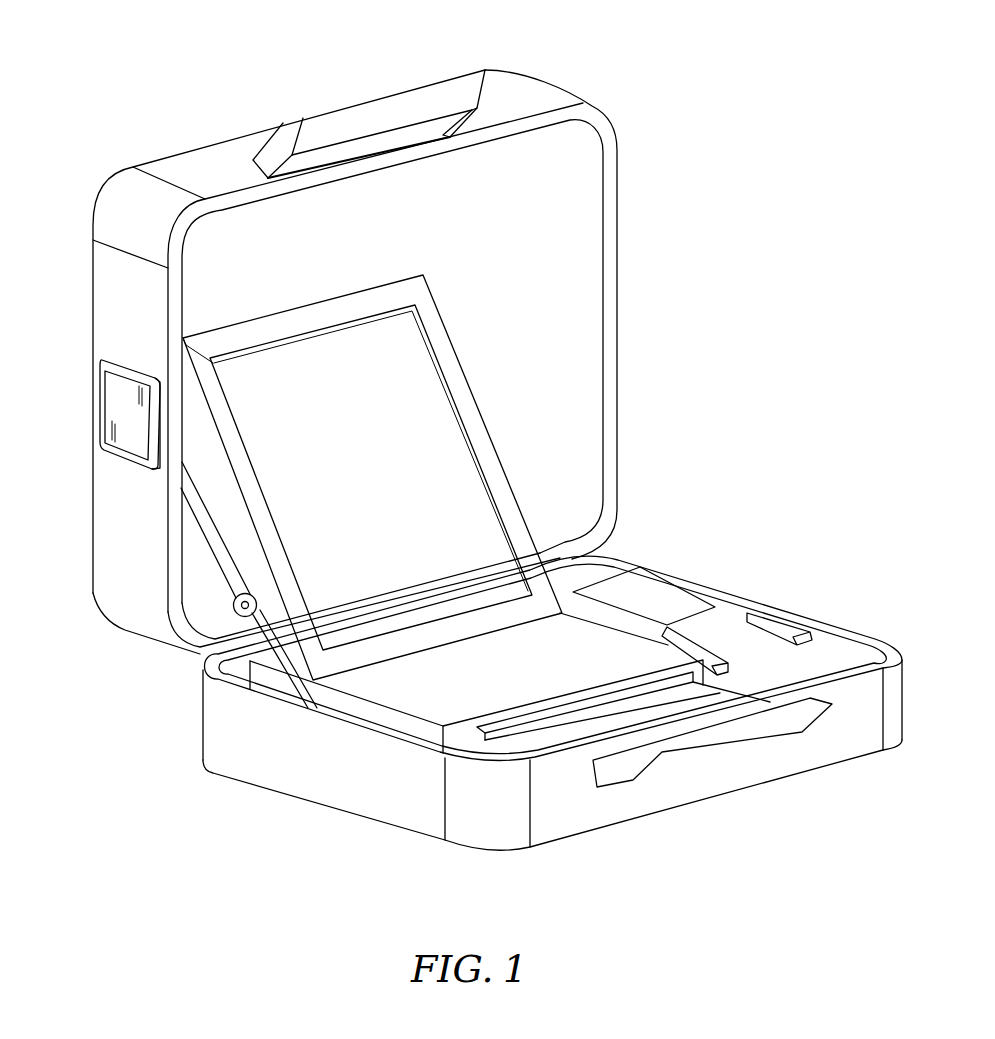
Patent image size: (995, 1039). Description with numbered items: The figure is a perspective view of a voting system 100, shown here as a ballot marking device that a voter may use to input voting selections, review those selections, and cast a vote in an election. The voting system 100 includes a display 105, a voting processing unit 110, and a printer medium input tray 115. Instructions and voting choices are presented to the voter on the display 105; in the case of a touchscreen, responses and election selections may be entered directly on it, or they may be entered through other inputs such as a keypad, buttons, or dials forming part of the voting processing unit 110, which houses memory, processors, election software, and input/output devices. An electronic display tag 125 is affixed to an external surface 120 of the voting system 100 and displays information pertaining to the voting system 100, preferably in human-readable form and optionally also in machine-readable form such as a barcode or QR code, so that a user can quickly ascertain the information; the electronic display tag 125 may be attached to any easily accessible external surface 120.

The voting system 100 is at (149, 63).
The display 105 is at (443, 435).
The voting processing unit 110 is at (372, 715).
The printer medium input tray 115 is at (518, 733).
The external surface 120 is at (553, 85).
The electronic display tag 125 is at (96, 360).